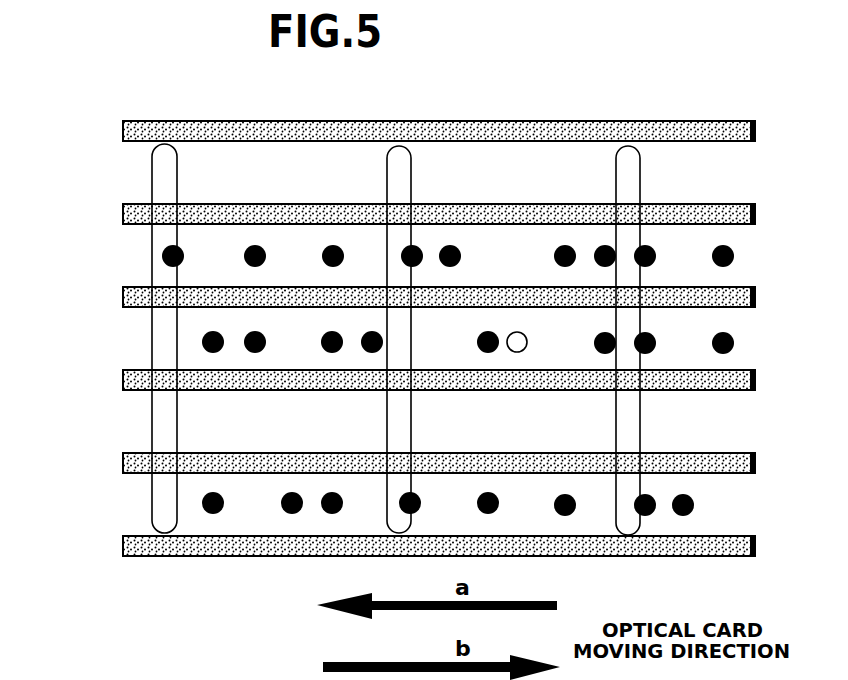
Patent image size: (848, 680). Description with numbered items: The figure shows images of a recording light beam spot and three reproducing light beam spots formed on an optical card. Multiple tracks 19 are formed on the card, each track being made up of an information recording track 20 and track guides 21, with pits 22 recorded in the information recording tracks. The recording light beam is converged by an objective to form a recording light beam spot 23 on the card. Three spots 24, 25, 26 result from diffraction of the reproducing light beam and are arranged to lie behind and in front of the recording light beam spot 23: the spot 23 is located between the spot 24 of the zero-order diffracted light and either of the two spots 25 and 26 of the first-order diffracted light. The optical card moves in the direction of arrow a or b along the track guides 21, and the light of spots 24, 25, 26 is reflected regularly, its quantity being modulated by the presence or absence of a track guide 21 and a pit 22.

The track 19 is at (59, 317).
The information recording track 20 is at (132, 340).
The track guide 21 is at (126, 378).
The pit 22 is at (735, 253).
The recording light beam spot 23 is at (527, 345).
The spot of zero-order diffracted light 24 is at (412, 165).
The spot of first-order diffracted light 25 is at (640, 177).
The spot of first-order diffracted light 26 is at (177, 172).